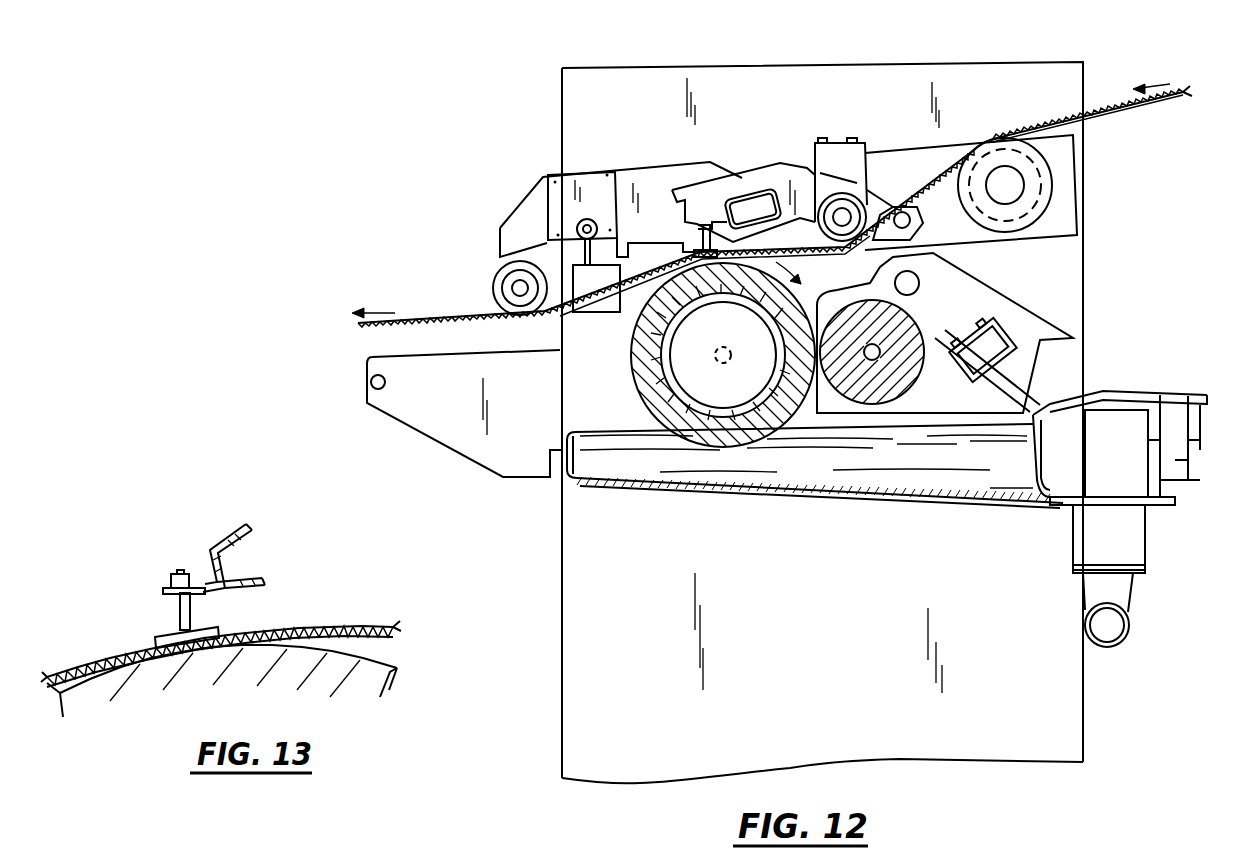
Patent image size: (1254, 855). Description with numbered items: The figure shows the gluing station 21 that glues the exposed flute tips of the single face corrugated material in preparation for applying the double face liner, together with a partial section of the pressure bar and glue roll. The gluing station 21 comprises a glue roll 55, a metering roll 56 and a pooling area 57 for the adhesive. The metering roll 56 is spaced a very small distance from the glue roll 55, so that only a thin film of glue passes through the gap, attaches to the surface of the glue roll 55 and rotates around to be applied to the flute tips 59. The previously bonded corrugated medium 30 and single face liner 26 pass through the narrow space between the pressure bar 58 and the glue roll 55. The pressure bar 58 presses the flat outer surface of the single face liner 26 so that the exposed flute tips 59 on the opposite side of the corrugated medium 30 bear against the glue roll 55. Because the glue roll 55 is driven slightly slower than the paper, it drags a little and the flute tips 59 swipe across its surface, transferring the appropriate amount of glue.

In FIG. 12, the gluing station 21 is at (726, 62).
In FIG. 12, the single face liner 26 is at (1184, 90).
In FIG. 13, the single face liner 26 is at (353, 627).
In FIG. 12, the corrugated medium 30 is at (1188, 96).
In FIG. 13, the corrugated medium 30 is at (363, 638).
In FIG. 12, the glue roll 55 is at (640, 400).
In FIG. 13, the glue roll 55 is at (398, 668).
In FIG. 12, the metering roll 56 is at (915, 313).
In FIG. 12, the pooling area 57 is at (829, 478).
In FIG. 12, the pressure bar 58 is at (702, 247).
In FIG. 13, the pressure bar 58 is at (160, 632).
In FIG. 12, the flute tips 59 is at (1178, 97).
In FIG. 13, the flute tips 59 is at (397, 643).